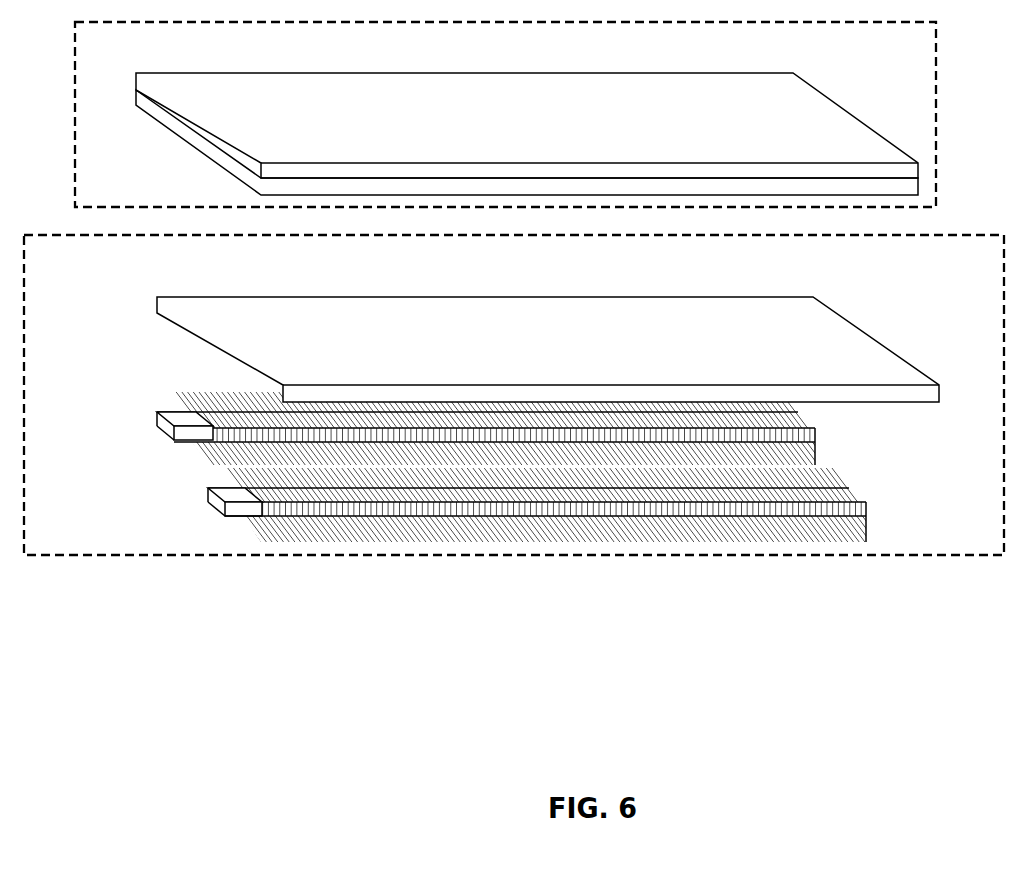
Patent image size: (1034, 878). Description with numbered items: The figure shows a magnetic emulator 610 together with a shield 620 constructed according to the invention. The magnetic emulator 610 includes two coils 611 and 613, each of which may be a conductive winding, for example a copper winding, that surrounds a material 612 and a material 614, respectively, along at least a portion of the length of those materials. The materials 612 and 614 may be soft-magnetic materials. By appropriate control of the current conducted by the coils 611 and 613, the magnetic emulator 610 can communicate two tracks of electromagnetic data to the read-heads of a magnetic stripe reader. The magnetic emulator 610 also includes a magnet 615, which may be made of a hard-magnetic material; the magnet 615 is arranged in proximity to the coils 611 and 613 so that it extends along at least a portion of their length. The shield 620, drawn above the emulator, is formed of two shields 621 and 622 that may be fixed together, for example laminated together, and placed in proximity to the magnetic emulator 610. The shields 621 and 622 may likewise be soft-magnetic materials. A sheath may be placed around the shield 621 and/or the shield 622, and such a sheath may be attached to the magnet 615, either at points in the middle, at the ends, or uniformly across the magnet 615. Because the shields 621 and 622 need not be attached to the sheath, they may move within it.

The magnetic emulator 610 is at (82, 236).
The coil 611 is at (253, 530).
The material 612 is at (210, 494).
The coil 613 is at (203, 450).
The material 614 is at (158, 418).
The magnet 615 is at (158, 296).
The shield 620 is at (107, 22).
The shield 621 is at (136, 100).
The shield 622 is at (136, 73).